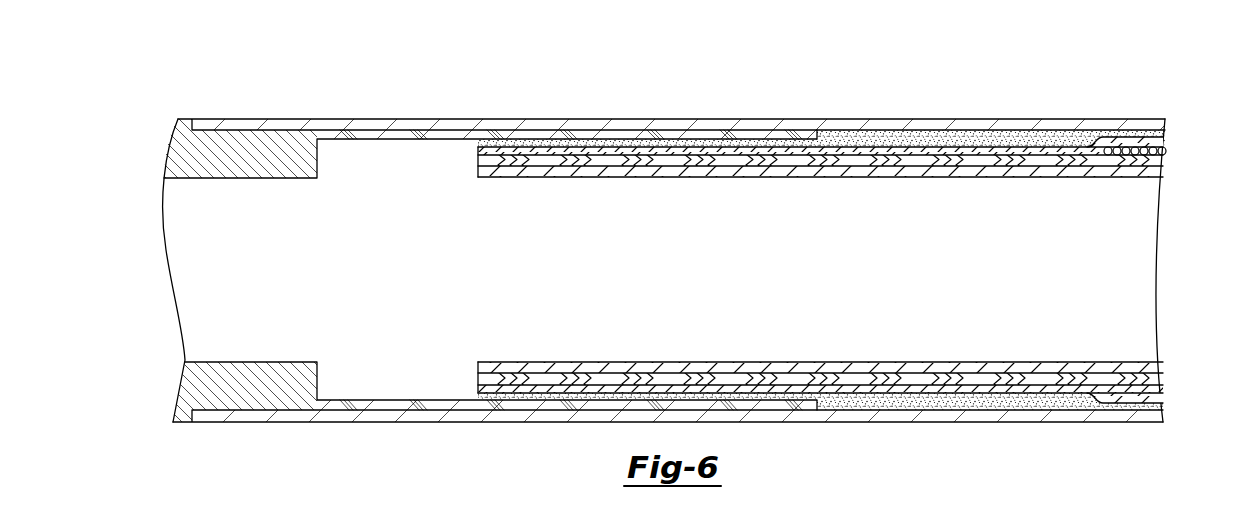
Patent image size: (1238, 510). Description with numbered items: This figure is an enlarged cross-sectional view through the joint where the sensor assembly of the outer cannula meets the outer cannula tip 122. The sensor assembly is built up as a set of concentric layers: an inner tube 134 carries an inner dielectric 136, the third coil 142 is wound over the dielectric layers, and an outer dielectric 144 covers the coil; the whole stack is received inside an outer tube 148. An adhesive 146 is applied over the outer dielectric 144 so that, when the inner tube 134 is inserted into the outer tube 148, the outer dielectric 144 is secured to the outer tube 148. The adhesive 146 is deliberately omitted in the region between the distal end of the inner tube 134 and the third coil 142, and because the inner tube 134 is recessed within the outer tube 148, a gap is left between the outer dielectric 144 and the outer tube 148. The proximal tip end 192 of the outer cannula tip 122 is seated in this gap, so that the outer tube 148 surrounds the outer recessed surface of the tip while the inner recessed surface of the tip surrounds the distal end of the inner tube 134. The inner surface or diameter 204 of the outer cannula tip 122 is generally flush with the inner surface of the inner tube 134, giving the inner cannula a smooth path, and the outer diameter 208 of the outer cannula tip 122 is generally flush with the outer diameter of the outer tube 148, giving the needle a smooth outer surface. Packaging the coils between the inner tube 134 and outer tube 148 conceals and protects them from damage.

The outer cannula tip 122 is at (195, 163).
The inner tube 134 is at (723, 178).
The inner dielectric 136 is at (848, 165).
The third coil 142 is at (1153, 150).
The outer dielectric 144 is at (1128, 142).
The adhesive 146 is at (1050, 139).
The outer tube 148 is at (223, 118).
The proximal tip end 192 is at (812, 138).
The inner surface or diameter of the outer cannula tip 204 is at (222, 362).
The outer diameter of the outer cannula tip 208 is at (480, 145).